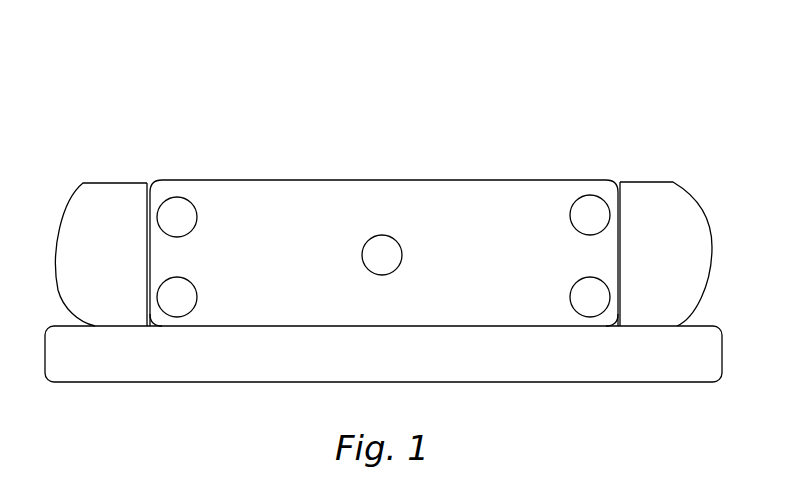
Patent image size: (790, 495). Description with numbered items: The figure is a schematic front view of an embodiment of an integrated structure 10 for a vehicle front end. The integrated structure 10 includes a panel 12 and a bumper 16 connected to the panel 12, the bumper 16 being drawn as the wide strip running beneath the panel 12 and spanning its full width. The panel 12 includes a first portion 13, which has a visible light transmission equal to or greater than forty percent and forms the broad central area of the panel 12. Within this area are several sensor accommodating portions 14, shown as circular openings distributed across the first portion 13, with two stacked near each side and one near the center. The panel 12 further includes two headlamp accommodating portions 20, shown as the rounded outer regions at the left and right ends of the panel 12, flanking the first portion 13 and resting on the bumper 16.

The integrated structure 10 is at (180, 125).
The panel 12 is at (293, 180).
The first portion 13 is at (468, 225).
The sensor accommodating portions 14 is at (178, 218).
The bumper 16 is at (205, 382).
The headlamp accommodating portions 20 is at (105, 232).